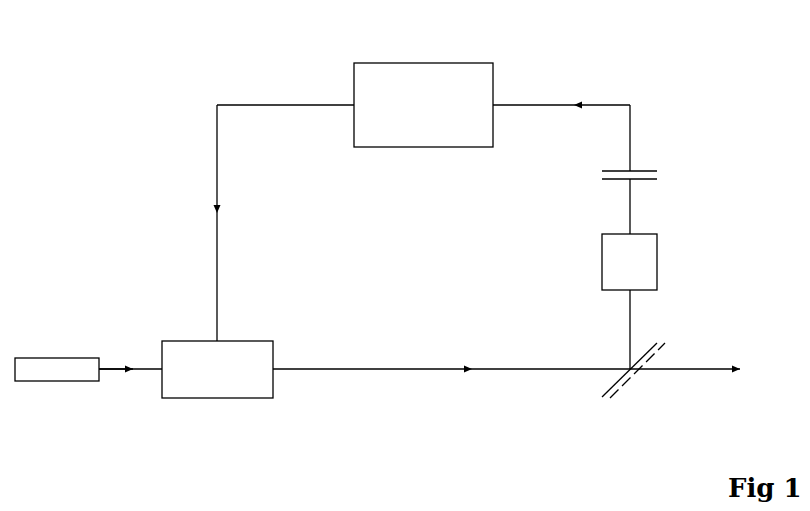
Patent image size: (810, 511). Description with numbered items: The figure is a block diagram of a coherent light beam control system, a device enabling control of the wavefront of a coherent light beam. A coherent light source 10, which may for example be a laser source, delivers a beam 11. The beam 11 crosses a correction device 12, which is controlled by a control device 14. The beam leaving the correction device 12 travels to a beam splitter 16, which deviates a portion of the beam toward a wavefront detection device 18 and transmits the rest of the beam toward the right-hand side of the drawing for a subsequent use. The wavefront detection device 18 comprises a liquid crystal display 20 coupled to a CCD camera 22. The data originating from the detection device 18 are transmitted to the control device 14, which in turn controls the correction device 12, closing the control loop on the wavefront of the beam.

The coherent light source 10 is at (44, 358).
The beam 11 is at (114, 367).
The correction device 12 is at (249, 341).
The control device 14 is at (408, 63).
The beam splitter 16 is at (615, 388).
The wavefront detection device 18 is at (626, 212).
The liquid crystal display 20 is at (602, 257).
The CCD camera 22 is at (617, 169).